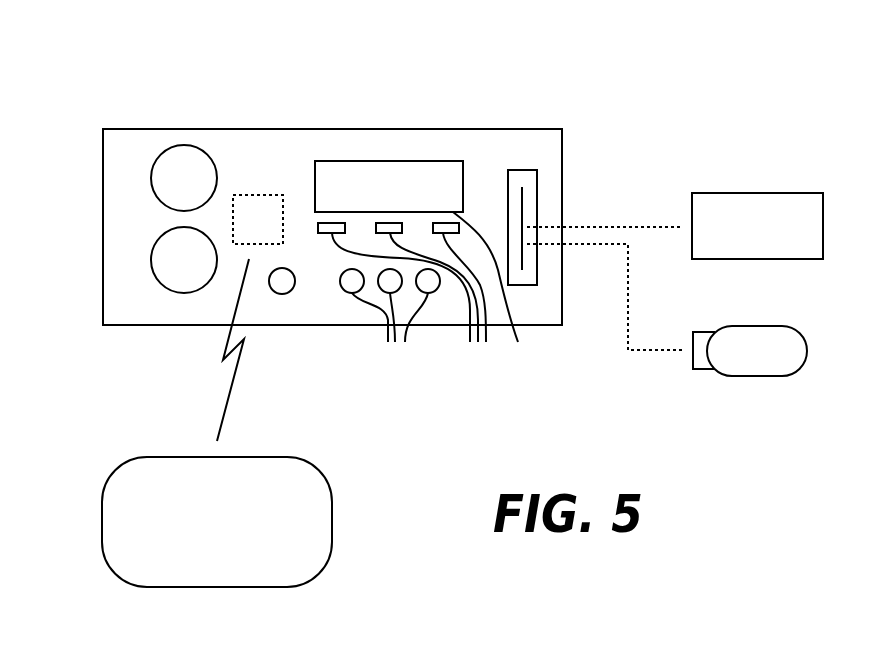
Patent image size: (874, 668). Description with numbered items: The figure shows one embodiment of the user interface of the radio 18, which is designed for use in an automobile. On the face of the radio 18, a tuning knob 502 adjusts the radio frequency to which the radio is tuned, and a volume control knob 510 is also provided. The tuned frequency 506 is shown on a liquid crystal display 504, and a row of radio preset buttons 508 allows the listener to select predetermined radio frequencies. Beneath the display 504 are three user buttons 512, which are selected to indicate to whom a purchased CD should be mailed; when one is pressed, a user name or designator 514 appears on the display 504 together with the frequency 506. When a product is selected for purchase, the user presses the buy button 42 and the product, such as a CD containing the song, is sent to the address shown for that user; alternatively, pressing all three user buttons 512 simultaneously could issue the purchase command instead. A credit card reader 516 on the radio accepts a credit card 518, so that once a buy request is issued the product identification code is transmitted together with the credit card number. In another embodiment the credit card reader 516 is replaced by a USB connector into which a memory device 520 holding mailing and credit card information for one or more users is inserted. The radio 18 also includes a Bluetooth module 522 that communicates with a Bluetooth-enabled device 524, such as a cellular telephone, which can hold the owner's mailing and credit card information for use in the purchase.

The radio 18 is at (434, 56).
The buy button 42 is at (283, 294).
The tuning knob 502 is at (151, 176).
The liquid crystal display 504 is at (332, 161).
The frequency 506 is at (413, 170).
The radio preset buttons 508 is at (408, 296).
The volume control knob 510 is at (151, 260).
The user buttons 512 is at (390, 319).
The user name or designator 514 is at (498, 291).
The credit card reader 516 is at (537, 203).
The credit card 518 is at (742, 193).
The memory device 520 is at (750, 326).
The Bluetooth module 522 is at (257, 195).
The Bluetooth-enabled device 524 is at (200, 587).